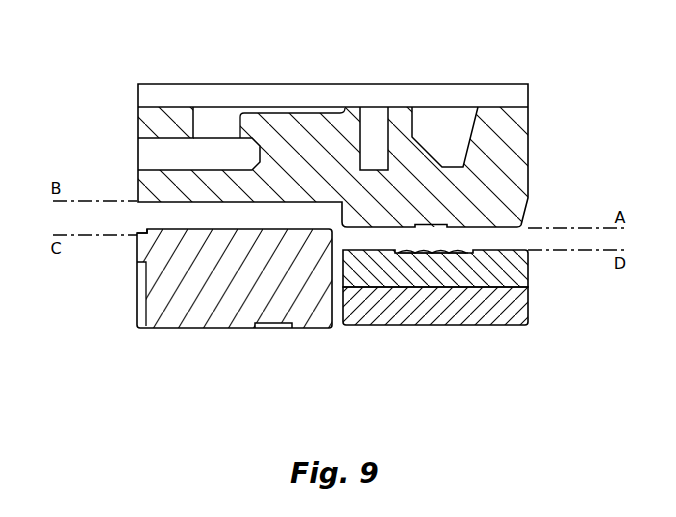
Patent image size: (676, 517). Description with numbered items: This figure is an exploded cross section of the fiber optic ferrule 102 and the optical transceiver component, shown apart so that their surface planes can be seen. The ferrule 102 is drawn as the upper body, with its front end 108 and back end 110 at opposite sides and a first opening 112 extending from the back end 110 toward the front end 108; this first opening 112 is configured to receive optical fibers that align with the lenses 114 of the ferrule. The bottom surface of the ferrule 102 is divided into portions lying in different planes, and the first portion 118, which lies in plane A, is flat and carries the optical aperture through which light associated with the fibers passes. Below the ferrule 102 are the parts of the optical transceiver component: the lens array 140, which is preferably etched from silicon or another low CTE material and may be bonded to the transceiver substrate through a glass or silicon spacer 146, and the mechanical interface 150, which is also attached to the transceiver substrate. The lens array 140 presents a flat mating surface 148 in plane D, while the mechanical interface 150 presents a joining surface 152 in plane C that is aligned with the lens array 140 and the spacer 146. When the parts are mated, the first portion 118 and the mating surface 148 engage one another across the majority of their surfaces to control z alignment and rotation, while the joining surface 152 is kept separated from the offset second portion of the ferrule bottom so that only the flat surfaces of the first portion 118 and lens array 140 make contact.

The fiber optic ferrule 102 is at (528, 124).
The front end 108 is at (528, 165).
The back end 110 is at (138, 126).
The first opening 112 is at (157, 157).
The lenses 114 is at (432, 155).
The first portion 118 is at (468, 251).
The lens array 140 is at (528, 262).
The glass or silicon spacer 146 is at (528, 308).
The mating surface 148 is at (380, 245).
The mechanical interface 150 is at (208, 306).
The joining surface 152 is at (198, 230).